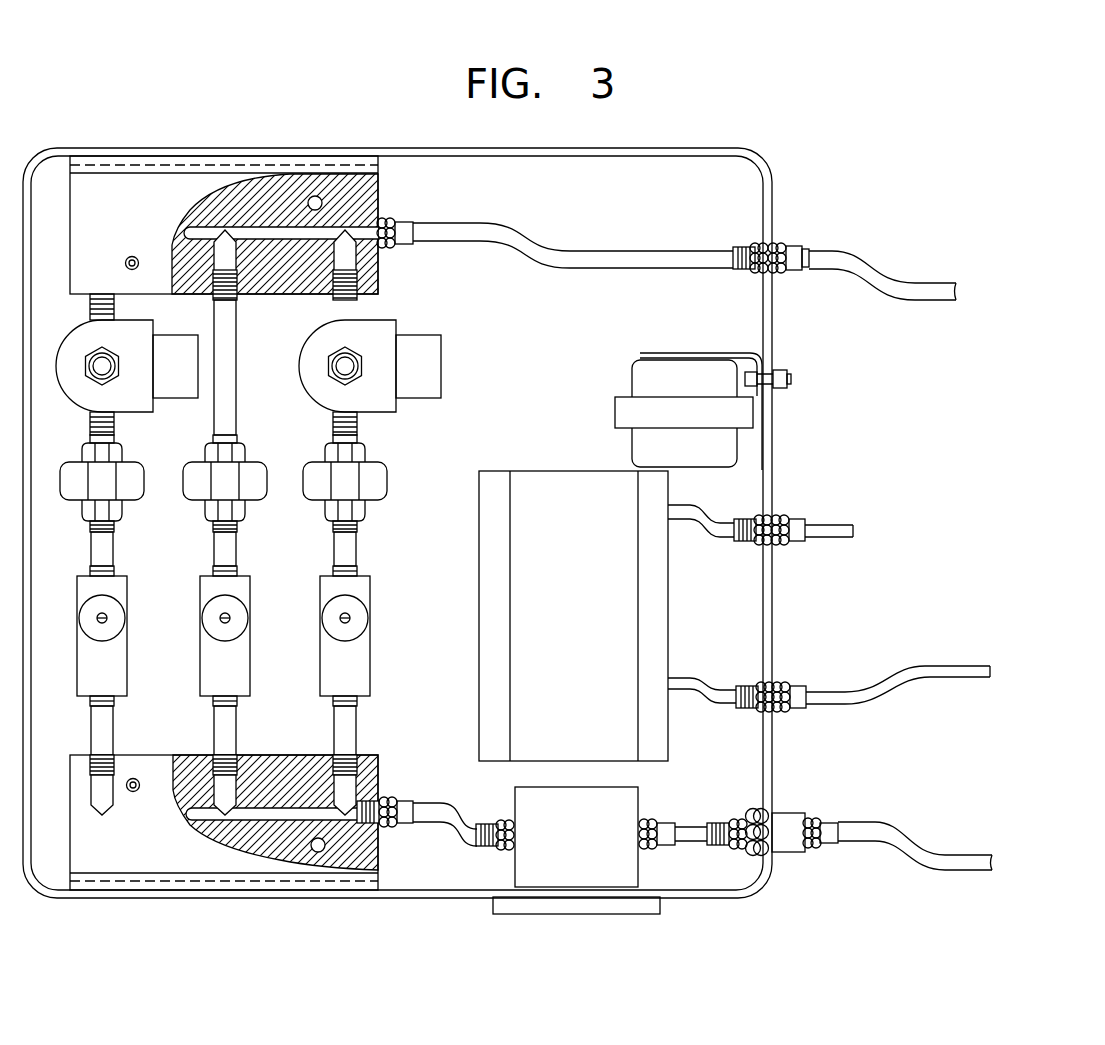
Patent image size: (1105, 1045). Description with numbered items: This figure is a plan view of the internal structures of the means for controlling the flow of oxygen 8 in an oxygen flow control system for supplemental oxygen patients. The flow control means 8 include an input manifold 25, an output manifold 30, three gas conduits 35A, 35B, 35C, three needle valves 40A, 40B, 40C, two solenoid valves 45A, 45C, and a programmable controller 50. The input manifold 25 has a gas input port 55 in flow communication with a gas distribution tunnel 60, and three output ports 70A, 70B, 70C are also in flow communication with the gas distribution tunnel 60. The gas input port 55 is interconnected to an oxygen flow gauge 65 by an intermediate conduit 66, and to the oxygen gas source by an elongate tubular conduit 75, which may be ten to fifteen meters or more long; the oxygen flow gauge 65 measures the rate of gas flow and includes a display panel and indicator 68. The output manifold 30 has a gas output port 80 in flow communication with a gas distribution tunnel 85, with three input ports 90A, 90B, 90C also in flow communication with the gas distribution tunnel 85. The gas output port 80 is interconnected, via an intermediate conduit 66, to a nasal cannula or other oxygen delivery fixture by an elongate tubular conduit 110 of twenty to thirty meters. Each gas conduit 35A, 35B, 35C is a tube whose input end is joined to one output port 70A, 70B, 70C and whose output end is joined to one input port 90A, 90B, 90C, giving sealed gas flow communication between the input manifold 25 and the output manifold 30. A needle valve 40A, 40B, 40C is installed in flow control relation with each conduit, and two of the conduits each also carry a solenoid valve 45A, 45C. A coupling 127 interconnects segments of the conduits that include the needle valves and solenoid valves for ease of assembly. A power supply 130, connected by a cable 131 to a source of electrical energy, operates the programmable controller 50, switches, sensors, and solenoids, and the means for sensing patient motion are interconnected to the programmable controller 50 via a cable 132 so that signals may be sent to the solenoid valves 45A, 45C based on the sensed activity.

The means for controlling the flow of oxygen 8 is at (748, 146).
The input manifold 25 is at (80, 795).
The output manifold 30 is at (80, 261).
The gas conduit 35A is at (112, 734).
The gas conduit 35B is at (234, 347).
The gas conduit 35C is at (360, 722).
The needle valve 40A is at (118, 670).
The needle valve 40B is at (240, 672).
The needle valve 40C is at (358, 670).
The solenoid valve 45A is at (92, 397).
The solenoid valve 45C is at (385, 402).
The programmable controller 50 is at (571, 468).
The gas input port 55 is at (402, 823).
The gas distribution tunnel 60 is at (186, 815).
The oxygen flow gauge 65 is at (591, 795).
The intermediate conduit 66 is at (556, 252).
The display panel and indicator 68 is at (625, 908).
The output port 70A is at (106, 745).
The output port 70B is at (232, 752).
The output port 70C is at (360, 755).
The elongate tubular conduit 75 is at (938, 864).
The gas output port 80 is at (393, 214).
The gas distribution tunnel 85 is at (186, 233).
The input port 90A is at (96, 310).
The input port 90B is at (222, 296).
The input port 90C is at (358, 297).
The elongate tubular conduit 110 is at (876, 268).
The coupling 127 is at (192, 474).
The power supply 130 is at (690, 355).
The cable 131 is at (960, 668).
The cable 132 is at (853, 533).